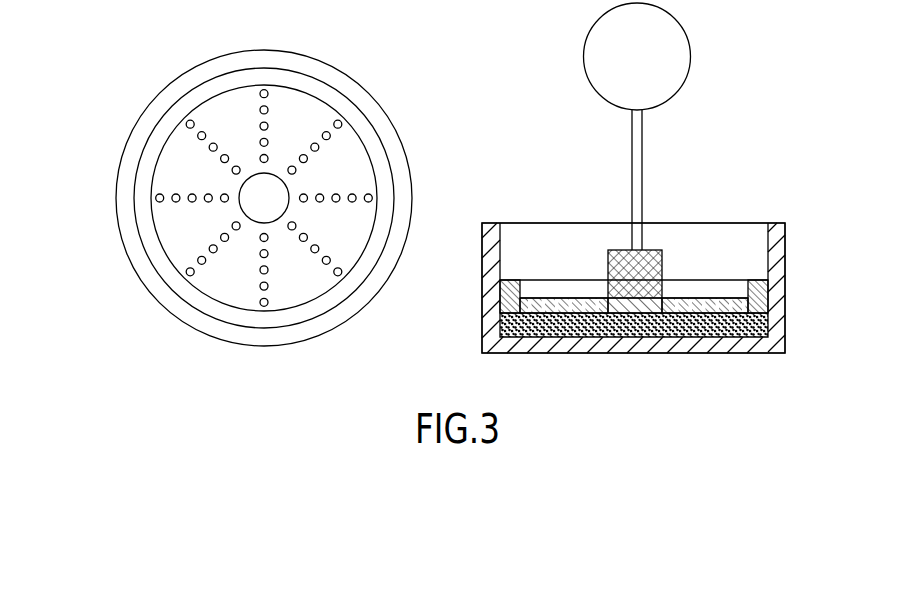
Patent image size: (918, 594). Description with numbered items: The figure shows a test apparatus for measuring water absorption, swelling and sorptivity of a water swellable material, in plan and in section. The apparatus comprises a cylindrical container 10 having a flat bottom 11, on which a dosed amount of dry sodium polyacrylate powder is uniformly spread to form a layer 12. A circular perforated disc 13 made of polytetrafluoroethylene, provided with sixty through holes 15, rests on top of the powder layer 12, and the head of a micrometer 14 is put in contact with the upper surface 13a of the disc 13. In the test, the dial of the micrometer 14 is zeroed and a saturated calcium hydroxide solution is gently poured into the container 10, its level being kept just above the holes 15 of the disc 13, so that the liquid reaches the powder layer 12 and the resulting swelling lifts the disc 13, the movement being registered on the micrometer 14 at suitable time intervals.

The cylindrical container 10 is at (192, 83).
The flat bottom 11 is at (703, 353).
The layer 12 is at (548, 325).
The circular perforated disc 13 is at (196, 299).
The upper surface 13a is at (295, 273).
The micrometer 14 is at (663, 36).
The through holes 15 is at (268, 110).